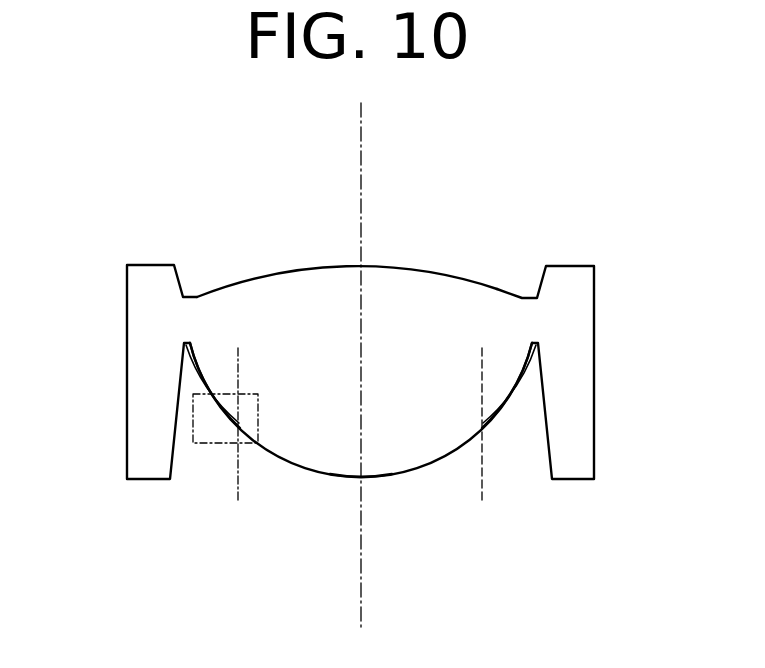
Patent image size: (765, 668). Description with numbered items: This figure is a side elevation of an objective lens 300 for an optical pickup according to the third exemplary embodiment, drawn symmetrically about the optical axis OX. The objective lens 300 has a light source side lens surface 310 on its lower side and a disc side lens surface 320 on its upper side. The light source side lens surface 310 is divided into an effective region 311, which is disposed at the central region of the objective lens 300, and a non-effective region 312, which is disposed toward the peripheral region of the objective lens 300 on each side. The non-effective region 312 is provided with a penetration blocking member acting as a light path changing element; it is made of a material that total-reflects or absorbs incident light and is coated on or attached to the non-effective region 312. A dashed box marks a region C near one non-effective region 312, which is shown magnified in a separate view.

The objective lens 300 is at (298, 105).
The light source side lens surface 310 is at (425, 472).
The effective region 311 is at (387, 478).
The non-effective region 312 is at (199, 372).
The disc side lens surface 320 is at (503, 272).
The region C is at (205, 444).
The optical axis OX is at (363, 103).